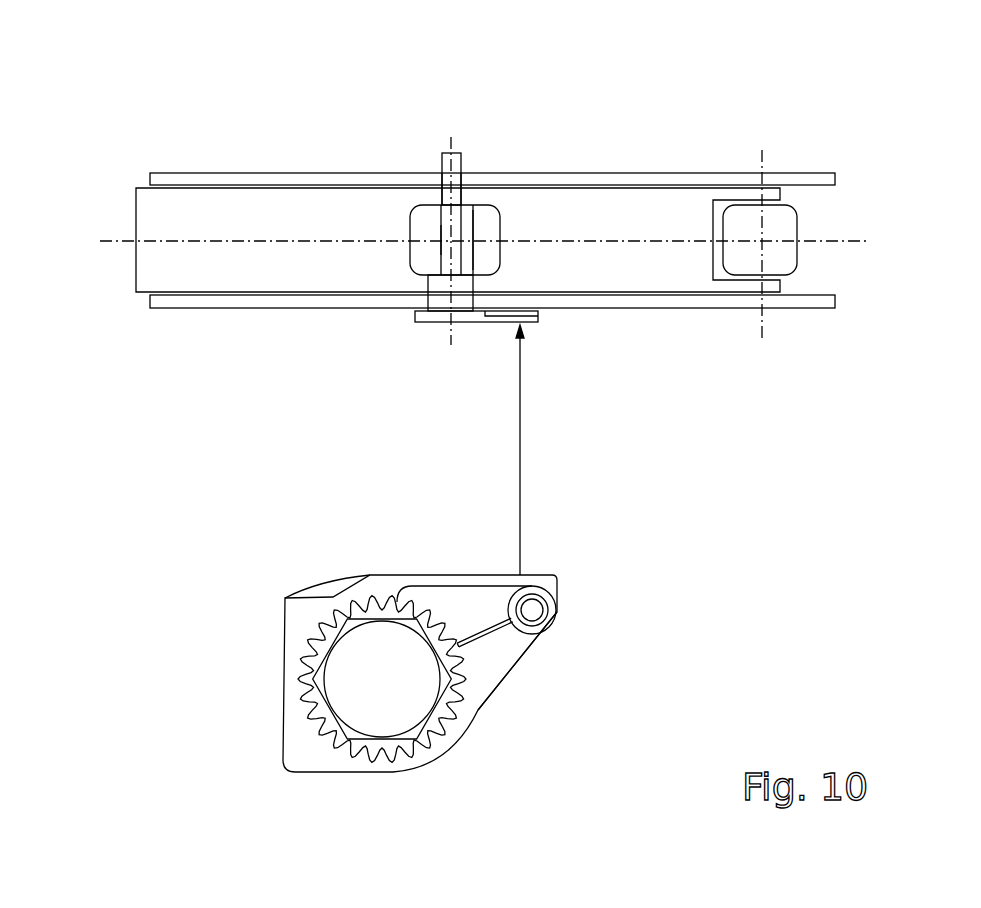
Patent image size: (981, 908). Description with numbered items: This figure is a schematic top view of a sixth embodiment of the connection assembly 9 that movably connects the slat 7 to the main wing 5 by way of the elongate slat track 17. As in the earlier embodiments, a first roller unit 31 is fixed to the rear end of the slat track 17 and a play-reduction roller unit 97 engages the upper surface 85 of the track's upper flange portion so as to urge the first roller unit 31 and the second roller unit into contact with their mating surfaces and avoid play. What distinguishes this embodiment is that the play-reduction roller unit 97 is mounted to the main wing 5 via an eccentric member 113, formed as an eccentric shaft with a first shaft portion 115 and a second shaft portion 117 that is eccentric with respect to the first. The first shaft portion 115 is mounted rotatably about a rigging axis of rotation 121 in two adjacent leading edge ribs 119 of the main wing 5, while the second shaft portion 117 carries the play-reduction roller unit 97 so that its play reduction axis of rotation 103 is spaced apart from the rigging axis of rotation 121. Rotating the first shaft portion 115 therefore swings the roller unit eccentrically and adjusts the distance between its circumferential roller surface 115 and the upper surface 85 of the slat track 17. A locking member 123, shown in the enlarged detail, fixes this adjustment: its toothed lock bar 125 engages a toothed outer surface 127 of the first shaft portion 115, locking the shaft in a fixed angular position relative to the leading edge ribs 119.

The connection assembly 9 is at (130, 116).
The leading edge ribs 119 is at (197, 173).
The upper surface 85 is at (362, 218).
The rigging axis of rotation 121 is at (450, 228).
The first shaft portion 115 is at (453, 157).
The eccentric member 113 is at (472, 180).
The play reduction axis of rotation 103 is at (453, 228).
The main wing 5 is at (624, 137).
The slat track 17 is at (614, 229).
The slat 7 is at (47, 254).
The second shaft portion 117 is at (463, 259).
The first roller unit 31 is at (778, 255).
The play-reduction roller unit 97 is at (423, 260).
The toothed outer surface 127 is at (453, 627).
The toothed lock bar 125 is at (490, 618).
The locking member 123 is at (467, 780).